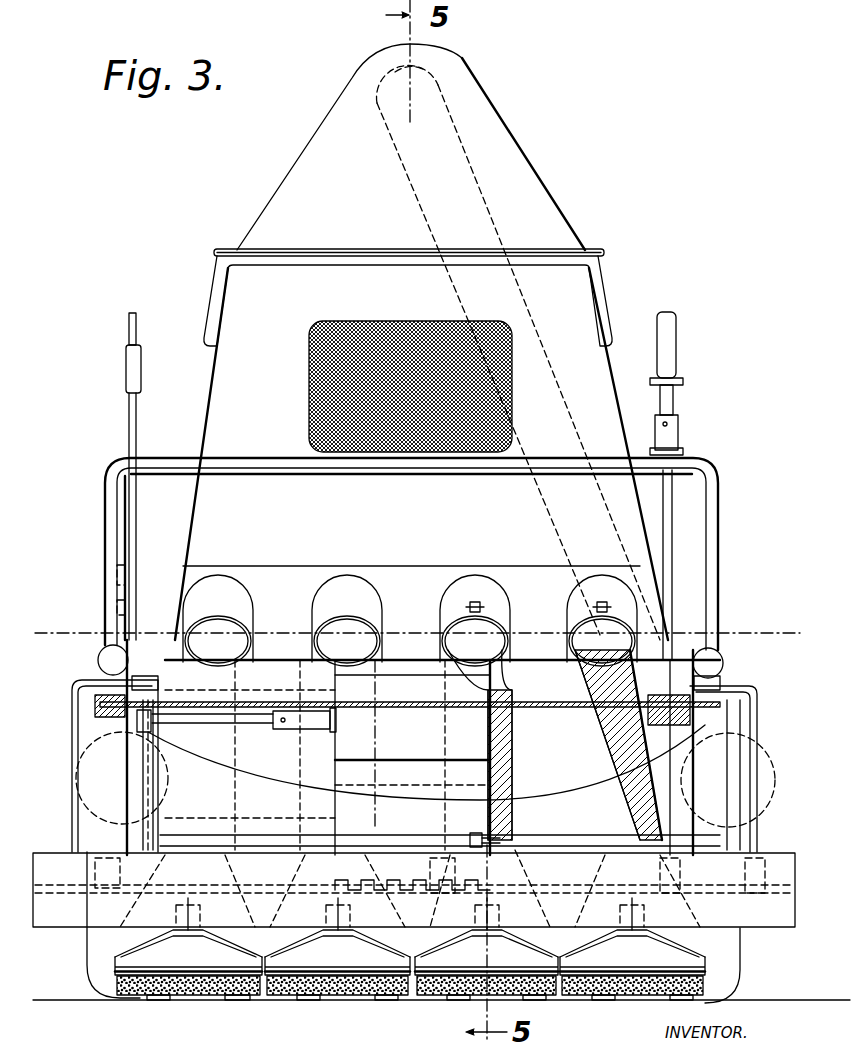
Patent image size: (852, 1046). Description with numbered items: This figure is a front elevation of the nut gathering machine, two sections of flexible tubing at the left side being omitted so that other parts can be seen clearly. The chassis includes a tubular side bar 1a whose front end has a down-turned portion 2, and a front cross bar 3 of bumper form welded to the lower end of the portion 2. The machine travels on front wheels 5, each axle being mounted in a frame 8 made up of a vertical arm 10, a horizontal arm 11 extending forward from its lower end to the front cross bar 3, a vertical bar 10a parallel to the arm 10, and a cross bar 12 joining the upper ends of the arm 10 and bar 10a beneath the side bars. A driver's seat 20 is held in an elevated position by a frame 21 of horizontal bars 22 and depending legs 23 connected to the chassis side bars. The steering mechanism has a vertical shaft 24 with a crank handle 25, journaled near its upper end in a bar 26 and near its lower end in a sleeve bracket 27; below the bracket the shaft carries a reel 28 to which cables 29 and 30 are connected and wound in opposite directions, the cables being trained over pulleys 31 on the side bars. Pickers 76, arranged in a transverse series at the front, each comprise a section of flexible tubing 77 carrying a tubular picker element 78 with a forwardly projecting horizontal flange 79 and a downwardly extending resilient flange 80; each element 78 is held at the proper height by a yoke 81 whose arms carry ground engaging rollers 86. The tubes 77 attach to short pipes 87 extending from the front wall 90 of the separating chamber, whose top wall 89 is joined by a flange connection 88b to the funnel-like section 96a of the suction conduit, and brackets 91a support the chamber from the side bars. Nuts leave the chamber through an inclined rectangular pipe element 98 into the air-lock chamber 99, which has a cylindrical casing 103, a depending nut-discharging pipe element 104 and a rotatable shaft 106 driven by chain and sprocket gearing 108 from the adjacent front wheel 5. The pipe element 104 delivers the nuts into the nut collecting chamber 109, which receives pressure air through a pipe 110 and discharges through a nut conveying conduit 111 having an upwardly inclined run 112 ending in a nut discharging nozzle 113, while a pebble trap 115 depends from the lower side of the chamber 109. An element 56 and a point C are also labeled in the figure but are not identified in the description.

The side bar 1a is at (100, 657).
The down-turned portion 2 is at (110, 773).
The front cross bar 3 is at (47, 915).
The front wheel 5 is at (90, 825).
The frame 8 is at (70, 745).
The vertical arm 10 is at (72, 797).
The vertical bar 10a is at (167, 793).
The horizontal arm 11 is at (48, 660).
The cross bar 12 is at (143, 690).
The driver's seat 20 is at (308, 374).
The frame 21 is at (277, 462).
The horizontal bar 22 is at (226, 468).
The depending legs 23 is at (110, 510).
The vertical shaft 24 is at (672, 565).
The crank handle 25 is at (672, 355).
The bar 26 is at (683, 448).
The sleeve bracket 27 is at (693, 647).
The reel 28 is at (690, 697).
The cable 29 is at (733, 710).
The cable 30 is at (413, 757).
The pulleys 31 is at (95, 697).
The control lever 56 is at (127, 371).
The picker 76 is at (580, 750).
The flexible tubing 77 is at (580, 787).
The picker element 78 is at (297, 908).
The horizontal flange 79 is at (337, 975).
The resilient flange 80 is at (340, 987).
The yoke 81 is at (448, 942).
The terminal roller 86 is at (247, 1003).
The short pipes 87 is at (323, 608).
The flange connection 88b is at (221, 250).
The top wall 89 is at (421, 452).
The front wall 90 is at (410, 608).
The brackets 91a is at (150, 643).
The funnel-like section 96a is at (502, 133).
The pipe element 98 is at (403, 672).
The air-lock chamber 99 is at (417, 700).
The cylindrical casing 103 is at (412, 749).
The nut-discharging pipe element 104 is at (405, 777).
The rotatable shaft 106 is at (297, 722).
The chain and sprocket gearing 108 is at (147, 740).
The nut collecting chamber 109 is at (414, 812).
The pipe 110 is at (250, 756).
The nut conveying conduit 111 is at (551, 825).
The upwardly inclined run 112 is at (483, 232).
The nut discharging nozzle 113 is at (432, 70).
The pebble trap 115 is at (440, 845).
The center line C is at (100, 645).